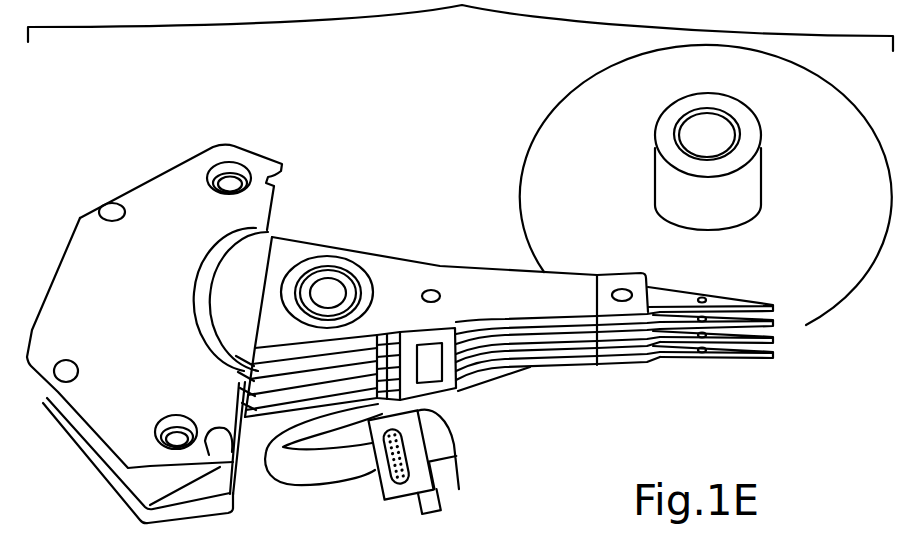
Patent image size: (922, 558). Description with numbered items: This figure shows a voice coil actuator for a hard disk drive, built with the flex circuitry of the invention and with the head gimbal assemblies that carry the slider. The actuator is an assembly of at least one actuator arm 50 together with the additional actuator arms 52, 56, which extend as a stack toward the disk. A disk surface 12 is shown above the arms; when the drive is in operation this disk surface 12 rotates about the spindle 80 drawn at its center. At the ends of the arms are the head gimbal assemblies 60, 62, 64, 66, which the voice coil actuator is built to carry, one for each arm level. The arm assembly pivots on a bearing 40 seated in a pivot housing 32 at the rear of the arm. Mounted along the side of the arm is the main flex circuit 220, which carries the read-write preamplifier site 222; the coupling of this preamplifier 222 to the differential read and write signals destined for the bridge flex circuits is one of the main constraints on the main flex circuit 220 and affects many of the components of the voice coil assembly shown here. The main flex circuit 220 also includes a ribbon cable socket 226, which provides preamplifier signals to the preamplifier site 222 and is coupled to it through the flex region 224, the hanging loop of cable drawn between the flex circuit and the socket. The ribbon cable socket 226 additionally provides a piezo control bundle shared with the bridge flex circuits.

The disk surface 12 is at (848, 120).
The pivot bearing housing 32 is at (230, 303).
The pivot bearing 40 is at (334, 285).
The actuator arm 50 is at (530, 283).
The actuator arm 52 is at (609, 337).
The actuator arm 56 is at (563, 362).
The head gimbal assembly 60 is at (742, 303).
The head gimbal assembly 62 is at (783, 320).
The head gimbal assembly 64 is at (760, 340).
The head gimbal assembly 66 is at (728, 347).
The spindle 80 is at (750, 182).
The main flex circuit 220 is at (438, 388).
The preamplifier 222 is at (429, 355).
The flex region 224 is at (318, 474).
The ribbon cable socket 226 is at (430, 495).